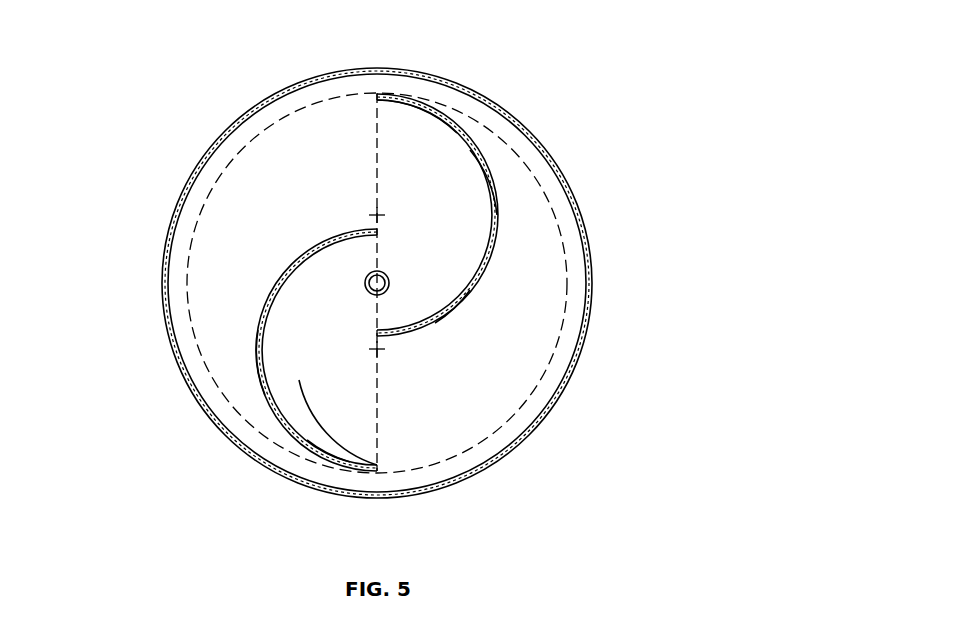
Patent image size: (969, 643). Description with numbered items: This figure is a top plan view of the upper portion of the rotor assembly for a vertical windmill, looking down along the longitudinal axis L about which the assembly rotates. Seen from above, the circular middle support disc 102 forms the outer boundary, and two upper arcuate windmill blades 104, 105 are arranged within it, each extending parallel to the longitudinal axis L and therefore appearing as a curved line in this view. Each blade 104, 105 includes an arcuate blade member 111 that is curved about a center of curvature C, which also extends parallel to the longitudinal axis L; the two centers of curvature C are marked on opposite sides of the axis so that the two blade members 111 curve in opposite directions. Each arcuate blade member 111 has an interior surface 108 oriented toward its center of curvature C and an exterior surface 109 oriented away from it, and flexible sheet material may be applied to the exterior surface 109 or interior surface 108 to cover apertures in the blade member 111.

The middle support disc 102 is at (573, 190).
The upper arcuate windmill blade 104 is at (467, 132).
The upper arcuate windmill blade 105 is at (280, 280).
The interior surface 108 is at (430, 113).
The exterior surface 109 is at (500, 241).
The arcuate blade member 111 is at (435, 323).
The longitudinal axis L is at (390, 274).
The center of curvature C is at (377, 215).